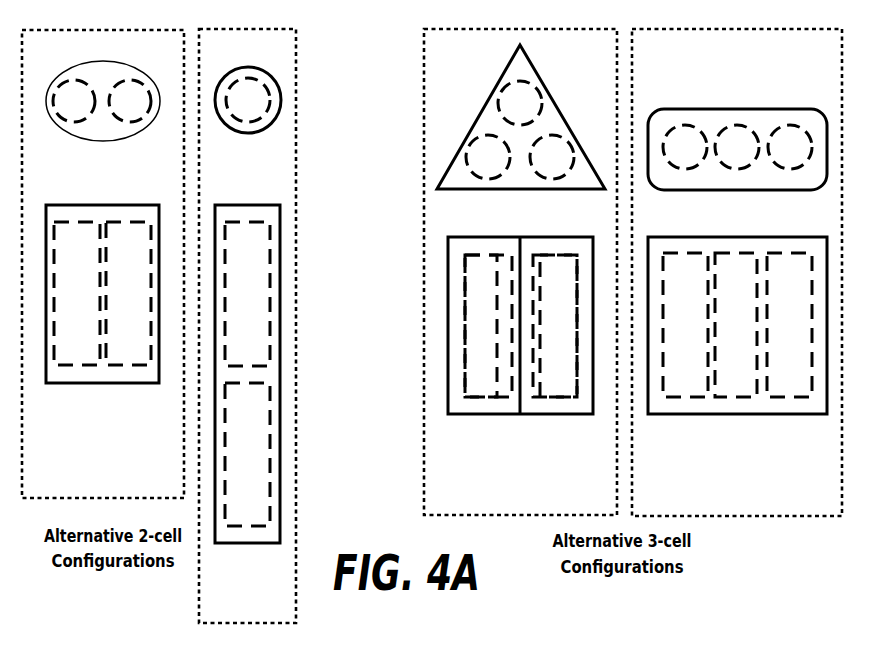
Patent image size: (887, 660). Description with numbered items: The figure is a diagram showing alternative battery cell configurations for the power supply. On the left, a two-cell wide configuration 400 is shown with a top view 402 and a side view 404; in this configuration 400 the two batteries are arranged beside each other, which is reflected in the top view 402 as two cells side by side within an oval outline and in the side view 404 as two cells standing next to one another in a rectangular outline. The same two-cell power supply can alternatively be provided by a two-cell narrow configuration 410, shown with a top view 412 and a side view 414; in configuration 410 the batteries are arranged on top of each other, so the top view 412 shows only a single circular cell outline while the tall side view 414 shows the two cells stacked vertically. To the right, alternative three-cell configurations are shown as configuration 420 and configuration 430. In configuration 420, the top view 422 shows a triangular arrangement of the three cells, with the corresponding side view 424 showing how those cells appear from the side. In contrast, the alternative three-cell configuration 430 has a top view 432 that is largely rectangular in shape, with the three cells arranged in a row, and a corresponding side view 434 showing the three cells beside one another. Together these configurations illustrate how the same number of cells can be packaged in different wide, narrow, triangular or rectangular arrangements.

The two-cell wide configuration 400 is at (103, 264).
The top view 402 is at (103, 121).
The side view 404 is at (102, 319).
The two-cell narrow configuration 410 is at (247, 326).
The top view 412 is at (251, 122).
The side view 414 is at (253, 391).
The three-cell configuration 420 is at (520, 272).
The top view 422 is at (521, 134).
The side view 424 is at (520, 343).
The three-cell configuration 430 is at (737, 272).
The top view 432 is at (737, 166).
The side view 434 is at (737, 343).